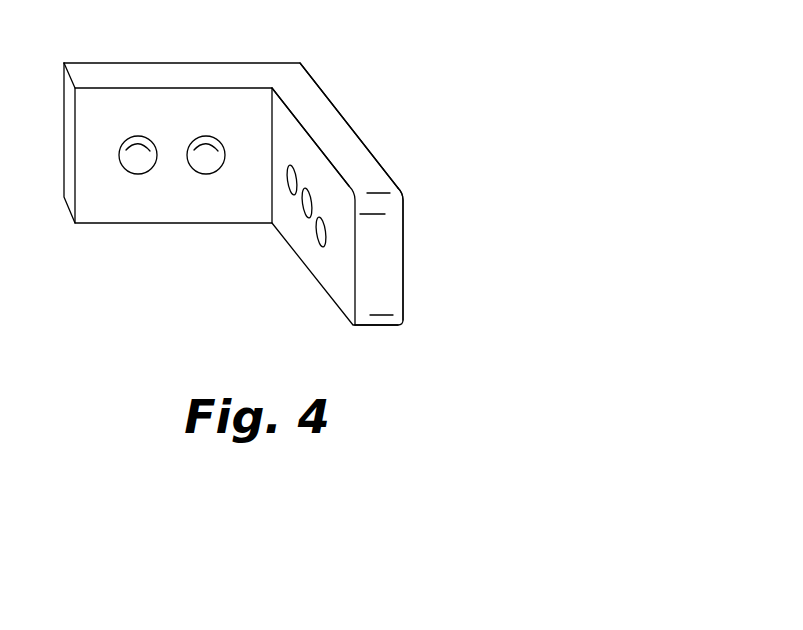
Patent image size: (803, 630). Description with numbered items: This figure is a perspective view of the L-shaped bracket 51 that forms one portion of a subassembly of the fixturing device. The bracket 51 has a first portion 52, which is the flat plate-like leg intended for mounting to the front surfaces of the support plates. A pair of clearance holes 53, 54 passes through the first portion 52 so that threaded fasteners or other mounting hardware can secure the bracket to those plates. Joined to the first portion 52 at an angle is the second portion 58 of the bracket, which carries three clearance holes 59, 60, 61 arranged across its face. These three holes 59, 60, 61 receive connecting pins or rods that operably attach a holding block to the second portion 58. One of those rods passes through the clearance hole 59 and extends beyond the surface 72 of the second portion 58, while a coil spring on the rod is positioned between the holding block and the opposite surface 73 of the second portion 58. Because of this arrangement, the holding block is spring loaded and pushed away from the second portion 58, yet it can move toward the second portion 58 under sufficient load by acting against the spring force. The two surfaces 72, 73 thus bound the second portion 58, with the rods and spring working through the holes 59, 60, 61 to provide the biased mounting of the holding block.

The L-shaped bracket 51 is at (204, 245).
The first portion 52 is at (140, 208).
The clearance hole 53 is at (148, 151).
The clearance hole 54 is at (216, 150).
The second portion 58 is at (335, 143).
The clearance hole 59 is at (291, 196).
The clearance hole 60 is at (306, 219).
The clearance hole 61 is at (320, 247).
The surface of second portion 72 is at (340, 288).
The surface of second portion 73 is at (378, 163).